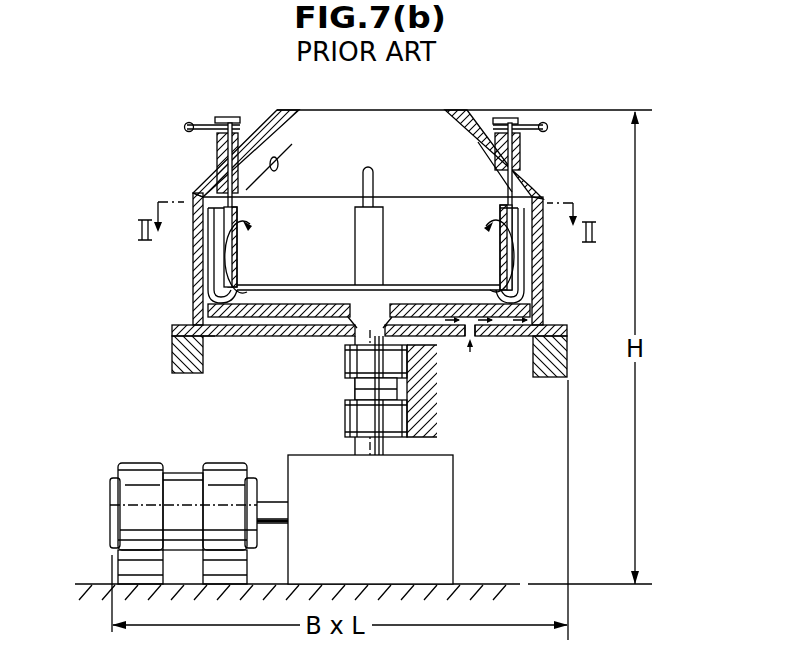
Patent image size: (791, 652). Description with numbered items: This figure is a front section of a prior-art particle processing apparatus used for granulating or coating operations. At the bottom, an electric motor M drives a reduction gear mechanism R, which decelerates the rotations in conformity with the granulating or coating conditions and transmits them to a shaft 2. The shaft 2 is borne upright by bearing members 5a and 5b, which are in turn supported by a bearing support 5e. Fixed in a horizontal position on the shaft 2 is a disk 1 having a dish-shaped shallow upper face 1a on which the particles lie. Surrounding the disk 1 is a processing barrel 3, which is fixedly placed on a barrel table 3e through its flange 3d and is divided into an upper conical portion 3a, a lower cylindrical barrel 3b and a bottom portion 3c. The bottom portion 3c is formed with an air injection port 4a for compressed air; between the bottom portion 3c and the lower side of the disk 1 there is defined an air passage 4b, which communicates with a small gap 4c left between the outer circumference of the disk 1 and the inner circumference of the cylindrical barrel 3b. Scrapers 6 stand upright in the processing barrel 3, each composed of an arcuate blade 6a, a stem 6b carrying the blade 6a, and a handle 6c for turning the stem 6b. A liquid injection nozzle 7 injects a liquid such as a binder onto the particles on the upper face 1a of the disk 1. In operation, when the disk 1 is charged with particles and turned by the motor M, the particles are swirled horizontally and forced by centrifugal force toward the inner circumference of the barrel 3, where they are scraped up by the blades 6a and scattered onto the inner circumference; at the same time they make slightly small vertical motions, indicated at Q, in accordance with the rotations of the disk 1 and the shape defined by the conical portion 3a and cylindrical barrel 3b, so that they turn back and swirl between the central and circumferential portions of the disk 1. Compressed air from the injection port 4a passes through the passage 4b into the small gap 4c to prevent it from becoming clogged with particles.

The disk 1 is at (500, 318).
The dish-shaped shallow upper face 1a is at (267, 296).
The shaft 2 is at (357, 392).
The processing barrel 3 is at (545, 263).
The upper conical portion 3a is at (200, 185).
The lower cylindrical barrel 3b is at (193, 268).
The bottom portion 3c is at (222, 338).
The flange 3d is at (180, 325).
The barrel table 3e is at (180, 355).
The air injection port 4a is at (468, 338).
The air passage 4b is at (295, 322).
The small gap 4c is at (546, 290).
The bearing member 5a is at (352, 364).
The bearing member 5b is at (355, 412).
The bearing support 5e is at (423, 420).
The scraper 6 is at (522, 150).
The arcuate blade 6a is at (376, 225).
The stem 6b is at (353, 168).
The handle 6c is at (539, 124).
The liquid injection nozzle 7 is at (269, 156).
The electric motor M is at (140, 466).
The reduction gear mechanism R is at (456, 480).
The vertical motions of the particles Q is at (247, 294).